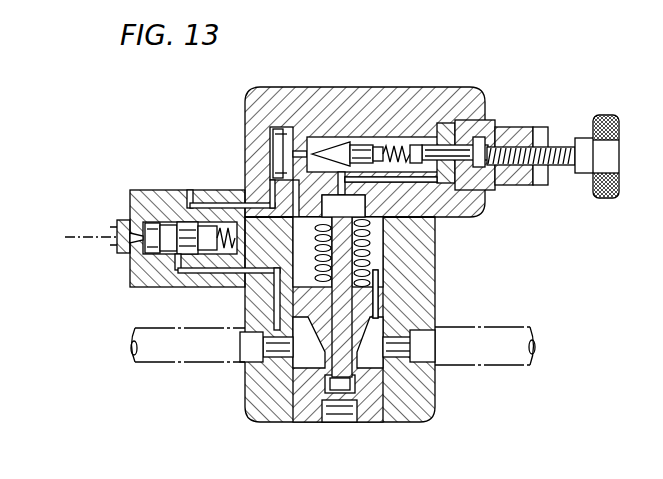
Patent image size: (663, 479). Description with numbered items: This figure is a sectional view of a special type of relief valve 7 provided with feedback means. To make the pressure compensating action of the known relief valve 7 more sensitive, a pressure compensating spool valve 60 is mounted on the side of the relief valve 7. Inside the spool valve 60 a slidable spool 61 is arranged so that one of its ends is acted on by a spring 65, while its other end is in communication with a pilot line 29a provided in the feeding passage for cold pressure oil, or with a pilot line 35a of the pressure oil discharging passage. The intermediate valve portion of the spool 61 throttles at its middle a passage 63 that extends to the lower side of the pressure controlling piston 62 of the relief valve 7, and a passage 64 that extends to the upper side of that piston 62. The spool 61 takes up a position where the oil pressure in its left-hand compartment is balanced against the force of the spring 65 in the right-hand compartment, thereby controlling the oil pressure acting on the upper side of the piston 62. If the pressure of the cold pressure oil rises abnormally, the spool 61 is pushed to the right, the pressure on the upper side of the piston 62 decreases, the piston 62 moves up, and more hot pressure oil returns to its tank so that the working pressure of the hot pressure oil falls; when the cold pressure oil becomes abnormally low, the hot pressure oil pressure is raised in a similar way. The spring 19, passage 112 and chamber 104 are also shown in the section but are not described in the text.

The relief valve 7 is at (358, 84).
The spring 19 is at (314, 282).
The passage 112 is at (350, 192).
The chamber 104 is at (353, 205).
The pressure compensating spool valve 60 is at (163, 190).
The slidable spool 61 is at (186, 190).
The passage 64 is at (214, 190).
The spring 65 is at (215, 260).
The passage 63 is at (236, 276).
The pressure controlling piston 62 is at (385, 325).
The pilot line 29a is at (66, 236).
The pilot line 35a is at (333, 346).